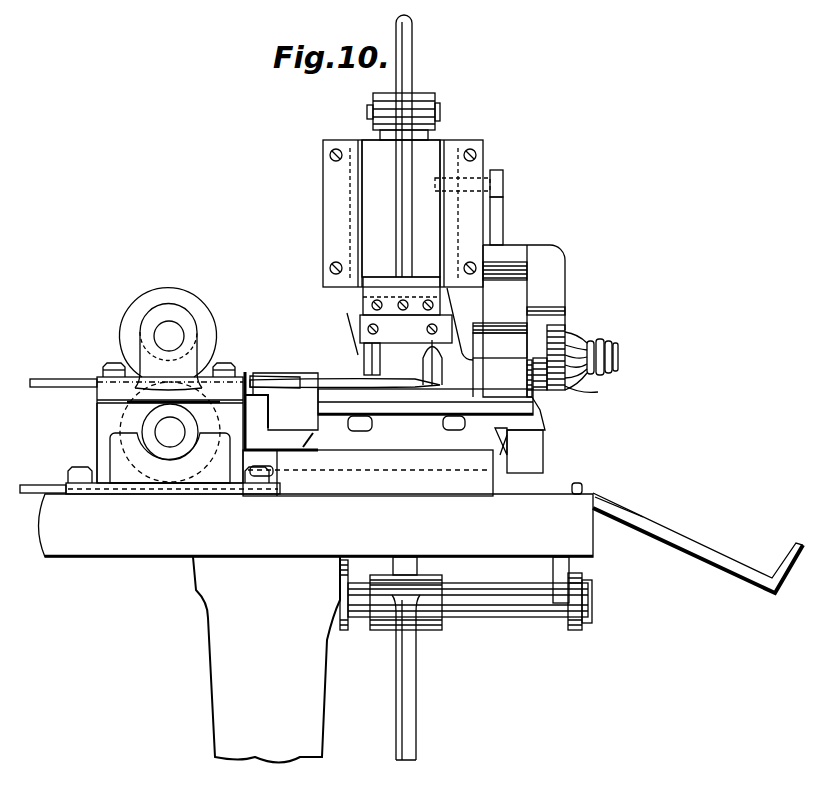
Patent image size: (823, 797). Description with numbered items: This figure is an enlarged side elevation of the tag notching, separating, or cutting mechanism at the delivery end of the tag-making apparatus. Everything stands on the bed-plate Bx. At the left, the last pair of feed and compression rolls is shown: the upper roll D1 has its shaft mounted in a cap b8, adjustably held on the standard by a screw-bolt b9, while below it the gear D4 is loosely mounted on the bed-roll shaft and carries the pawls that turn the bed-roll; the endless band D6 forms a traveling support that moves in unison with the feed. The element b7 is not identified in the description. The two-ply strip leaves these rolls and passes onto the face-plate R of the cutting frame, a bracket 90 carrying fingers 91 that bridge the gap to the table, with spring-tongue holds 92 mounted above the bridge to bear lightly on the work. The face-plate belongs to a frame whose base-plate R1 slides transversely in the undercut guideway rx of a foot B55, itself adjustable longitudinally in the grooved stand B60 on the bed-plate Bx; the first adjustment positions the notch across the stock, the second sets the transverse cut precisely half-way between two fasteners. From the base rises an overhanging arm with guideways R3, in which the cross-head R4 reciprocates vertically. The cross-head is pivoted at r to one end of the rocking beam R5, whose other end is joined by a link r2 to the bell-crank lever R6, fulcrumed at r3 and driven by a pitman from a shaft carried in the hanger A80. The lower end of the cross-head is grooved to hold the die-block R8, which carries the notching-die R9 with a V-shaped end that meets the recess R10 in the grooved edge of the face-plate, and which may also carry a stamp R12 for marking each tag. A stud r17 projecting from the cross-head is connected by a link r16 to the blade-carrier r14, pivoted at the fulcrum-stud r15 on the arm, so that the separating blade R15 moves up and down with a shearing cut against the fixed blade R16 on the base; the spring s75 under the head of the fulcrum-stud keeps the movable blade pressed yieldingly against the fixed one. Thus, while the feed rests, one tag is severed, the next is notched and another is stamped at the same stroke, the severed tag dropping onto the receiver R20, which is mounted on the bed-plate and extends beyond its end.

The rocking beam R5 is at (412, 60).
The pivotal connection r is at (440, 110).
The guideways R3 is at (362, 172).
The cross-head R4 is at (380, 202).
The stud r17 is at (504, 182).
The link r16 is at (504, 222).
The die-block R8 is at (455, 325).
The blade-carrier r14 is at (540, 308).
The face-plate R is at (352, 393).
The stamp R12 is at (372, 358).
The notching-die R9 is at (444, 375).
The fixed blade R16 is at (500, 395).
The transverse cutter or separating blade R15 is at (560, 345).
The fulcrum-stud r15 is at (618, 356).
The spring s75 is at (602, 380).
The base-plate R1 is at (512, 430).
The undercut guideway rx is at (507, 442).
The foot B55 is at (545, 455).
The recess R10 is at (428, 404).
The stand B60 is at (478, 493).
The bracket 90 is at (281, 411).
The fingers 91 is at (285, 398).
The spring-tongue holds 92 is at (278, 377).
The bed-plate Bx is at (316, 520).
The upper rolls D1 is at (160, 290).
The gear D4 is at (155, 470).
The endless band D6 is at (37, 378).
The screw-bolts b9 is at (108, 365).
The caps b8 is at (233, 385).
The housing wall b7 is at (97, 418).
The receiver R20 is at (675, 548).
The hanger A80 is at (215, 665).
The fulcrum r3 is at (518, 618).
The link r2 is at (420, 575).
The bell-crank lever R6 is at (417, 705).